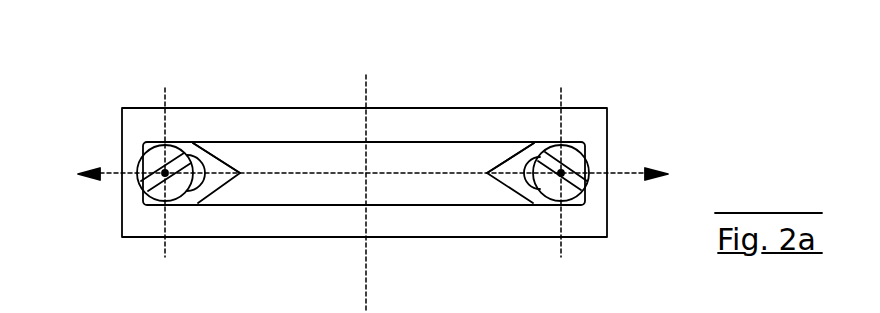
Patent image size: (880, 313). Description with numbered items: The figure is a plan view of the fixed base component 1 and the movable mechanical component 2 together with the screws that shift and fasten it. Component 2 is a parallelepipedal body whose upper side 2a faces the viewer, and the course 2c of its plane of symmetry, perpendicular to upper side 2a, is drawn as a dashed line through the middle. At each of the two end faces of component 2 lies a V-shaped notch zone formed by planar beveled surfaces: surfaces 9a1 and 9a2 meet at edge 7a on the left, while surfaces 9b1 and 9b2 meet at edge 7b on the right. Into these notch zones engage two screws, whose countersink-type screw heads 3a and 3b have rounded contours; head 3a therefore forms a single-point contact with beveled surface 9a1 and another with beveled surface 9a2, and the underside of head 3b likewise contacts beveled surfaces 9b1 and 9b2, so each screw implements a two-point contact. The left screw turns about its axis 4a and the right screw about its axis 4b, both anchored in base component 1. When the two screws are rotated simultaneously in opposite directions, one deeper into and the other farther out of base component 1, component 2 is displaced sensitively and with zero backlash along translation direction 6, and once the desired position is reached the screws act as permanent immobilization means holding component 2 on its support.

The fixed base component 1 is at (585, 122).
The mechanical component 2 is at (460, 152).
The upper side 2a is at (313, 165).
The course of the plane of symmetry 2c is at (402, 173).
The screw head 3a is at (153, 163).
The screw head 3b is at (573, 159).
The axis of the left screw 4a is at (170, 182).
The axis of the right screw 4b is at (538, 200).
The translation direction 6 is at (114, 174).
The edge 7a is at (217, 173).
The edge 7b is at (520, 187).
The beveled surface of V-shaped notch zone 9a1 is at (198, 155).
The beveled surface of V-shaped notch zone 9a2 is at (207, 185).
The beveled surface of V-shaped notch zone 9b1 is at (523, 158).
The beveled surface of V-shaped notch zone 9b2 is at (507, 173).